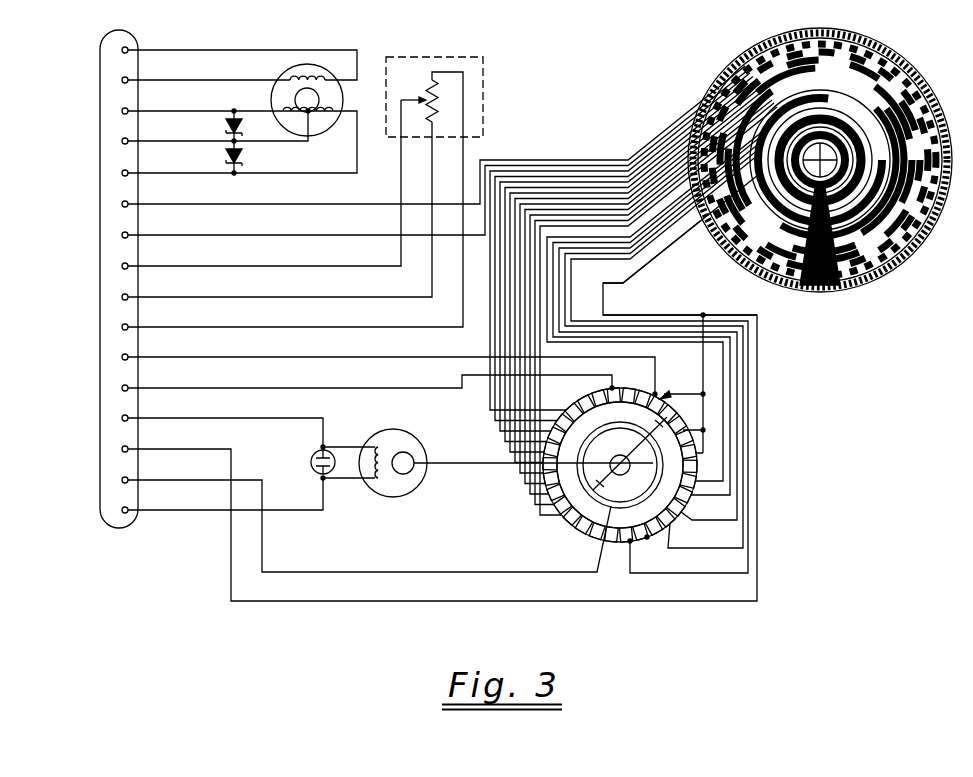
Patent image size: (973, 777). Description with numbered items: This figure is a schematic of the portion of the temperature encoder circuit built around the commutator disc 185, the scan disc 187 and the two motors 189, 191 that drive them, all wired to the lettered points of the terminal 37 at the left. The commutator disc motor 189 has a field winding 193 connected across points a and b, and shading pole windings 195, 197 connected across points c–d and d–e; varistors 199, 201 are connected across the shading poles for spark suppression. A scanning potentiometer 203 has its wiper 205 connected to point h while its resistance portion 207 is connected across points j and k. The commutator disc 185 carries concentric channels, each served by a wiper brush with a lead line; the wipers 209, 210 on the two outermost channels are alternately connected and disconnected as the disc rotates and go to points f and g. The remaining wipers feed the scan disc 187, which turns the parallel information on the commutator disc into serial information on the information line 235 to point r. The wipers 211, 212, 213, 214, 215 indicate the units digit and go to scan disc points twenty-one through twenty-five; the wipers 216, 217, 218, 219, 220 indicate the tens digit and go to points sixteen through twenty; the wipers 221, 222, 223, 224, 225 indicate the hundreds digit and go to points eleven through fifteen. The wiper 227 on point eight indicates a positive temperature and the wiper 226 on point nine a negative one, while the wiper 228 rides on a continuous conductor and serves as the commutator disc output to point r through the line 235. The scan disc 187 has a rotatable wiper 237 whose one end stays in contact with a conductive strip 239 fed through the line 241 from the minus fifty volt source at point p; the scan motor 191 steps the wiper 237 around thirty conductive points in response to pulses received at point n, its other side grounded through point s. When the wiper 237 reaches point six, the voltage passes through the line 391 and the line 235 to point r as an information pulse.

The terminal 37 is at (98, 432).
The commutator disc 185 is at (915, 70).
The scan disc 187 is at (620, 447).
The commutator disc motor 189 is at (304, 85).
The scan motor 191 is at (392, 496).
The field winding 193 is at (302, 72).
The shading pole winding 195 is at (296, 113).
The shading pole winding 197 is at (316, 113).
The varistor 199 is at (228, 128).
The varistor 201 is at (228, 158).
The scanning potentiometer 203 is at (444, 79).
The wiper 205 is at (414, 98).
The resistance portion 207 is at (440, 104).
The wiper 209 is at (514, 160).
The wiper 210 is at (547, 166).
The wiper 211 is at (490, 410).
The wiper 212 is at (495, 420).
The wiper 213 is at (500, 431).
The wiper 214 is at (505, 442).
The wiper 215 is at (510, 452).
The wiper 216 is at (515, 462).
The wiper 217 is at (520, 473).
The wiper 218 is at (525, 484).
The wiper 219 is at (530, 494).
The wiper 220 is at (535, 504).
The wiper 221 is at (540, 515).
The wiper 222 is at (606, 238).
The wiper 223 is at (549, 270).
The wiper 224 is at (554, 284).
The wiper 225 is at (560, 297).
The wiper 226 is at (566, 312).
The wiper 227 is at (617, 315).
The wiper 228 is at (621, 283).
The information line 235 is at (318, 603).
The rotatable wiper 237 is at (640, 451).
The conductive strip 239 is at (646, 492).
The line 241 is at (317, 571).
The line 391 is at (703, 380).